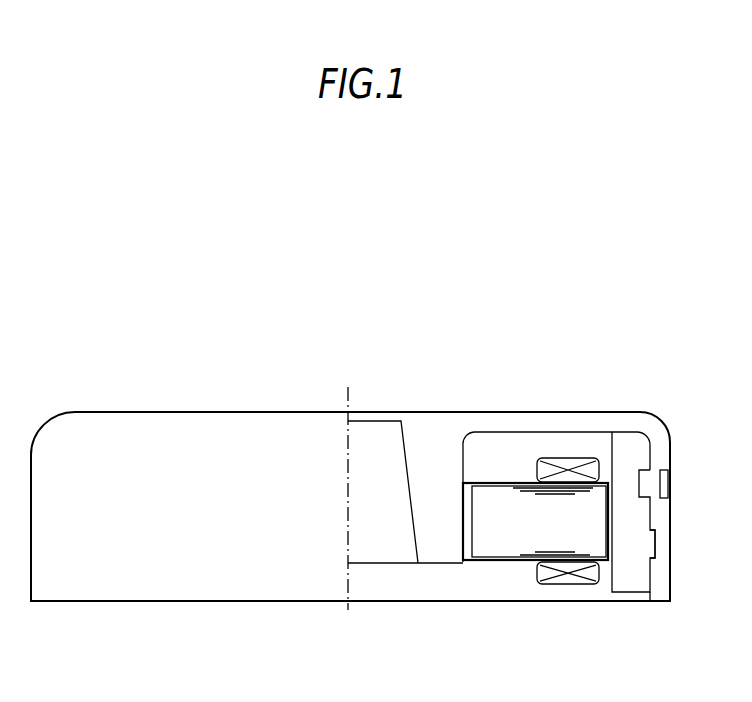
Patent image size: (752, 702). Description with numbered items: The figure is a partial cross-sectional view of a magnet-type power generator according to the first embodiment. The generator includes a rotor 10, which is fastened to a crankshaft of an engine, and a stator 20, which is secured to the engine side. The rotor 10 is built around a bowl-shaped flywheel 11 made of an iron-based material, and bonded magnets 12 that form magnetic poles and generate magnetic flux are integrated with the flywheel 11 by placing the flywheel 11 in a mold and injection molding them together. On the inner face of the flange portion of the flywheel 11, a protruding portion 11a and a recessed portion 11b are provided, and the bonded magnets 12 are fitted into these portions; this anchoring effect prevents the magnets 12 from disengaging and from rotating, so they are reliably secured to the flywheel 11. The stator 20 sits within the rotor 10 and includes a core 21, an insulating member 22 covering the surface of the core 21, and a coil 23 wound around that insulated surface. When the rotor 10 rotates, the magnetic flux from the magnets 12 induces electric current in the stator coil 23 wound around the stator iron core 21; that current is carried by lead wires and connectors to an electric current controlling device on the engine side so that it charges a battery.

The rotor 10 is at (201, 428).
The flywheel 11 is at (485, 415).
The magnet 12 is at (622, 453).
The protruding portion 11a is at (648, 477).
The recessed portion 11b is at (658, 550).
The stator 20 is at (478, 526).
The core 21 is at (493, 542).
The insulating member 22 is at (512, 563).
The coil 23 is at (573, 582).